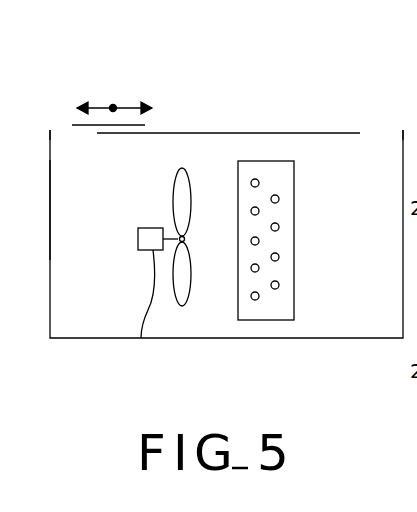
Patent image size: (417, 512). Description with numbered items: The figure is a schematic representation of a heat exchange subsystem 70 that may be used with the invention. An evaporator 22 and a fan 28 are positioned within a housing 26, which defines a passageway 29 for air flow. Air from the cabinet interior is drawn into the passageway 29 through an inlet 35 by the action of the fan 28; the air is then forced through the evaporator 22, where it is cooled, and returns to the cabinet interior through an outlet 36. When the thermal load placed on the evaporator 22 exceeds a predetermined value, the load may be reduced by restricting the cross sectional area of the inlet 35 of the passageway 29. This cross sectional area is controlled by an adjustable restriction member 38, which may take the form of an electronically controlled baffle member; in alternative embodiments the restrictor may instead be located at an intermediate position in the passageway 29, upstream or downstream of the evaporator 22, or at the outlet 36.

The evaporator 22 is at (271, 311).
The housing 26 is at (88, 338).
The fan 28 is at (141, 338).
The passageway 29 is at (62, 234).
The inlet 35 is at (67, 134).
The outlet 36 is at (378, 135).
The adjustable restriction member 38 is at (150, 126).
The heat exchange subsystem 70 is at (265, 72).